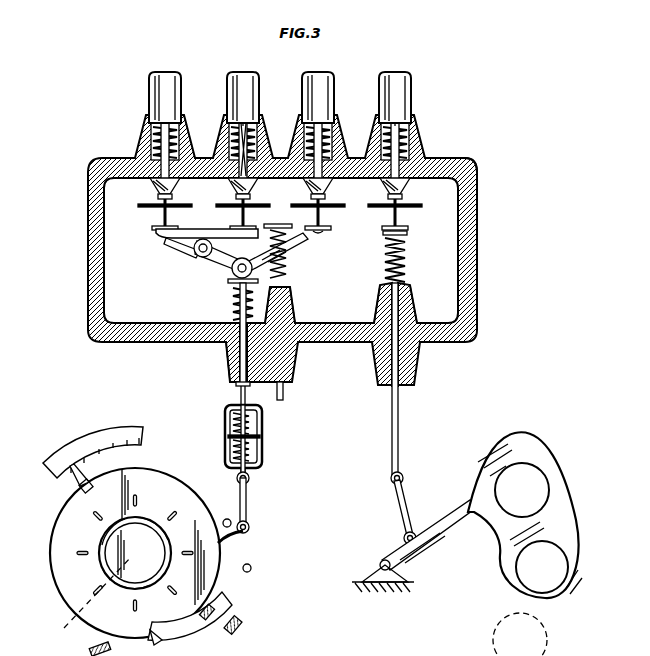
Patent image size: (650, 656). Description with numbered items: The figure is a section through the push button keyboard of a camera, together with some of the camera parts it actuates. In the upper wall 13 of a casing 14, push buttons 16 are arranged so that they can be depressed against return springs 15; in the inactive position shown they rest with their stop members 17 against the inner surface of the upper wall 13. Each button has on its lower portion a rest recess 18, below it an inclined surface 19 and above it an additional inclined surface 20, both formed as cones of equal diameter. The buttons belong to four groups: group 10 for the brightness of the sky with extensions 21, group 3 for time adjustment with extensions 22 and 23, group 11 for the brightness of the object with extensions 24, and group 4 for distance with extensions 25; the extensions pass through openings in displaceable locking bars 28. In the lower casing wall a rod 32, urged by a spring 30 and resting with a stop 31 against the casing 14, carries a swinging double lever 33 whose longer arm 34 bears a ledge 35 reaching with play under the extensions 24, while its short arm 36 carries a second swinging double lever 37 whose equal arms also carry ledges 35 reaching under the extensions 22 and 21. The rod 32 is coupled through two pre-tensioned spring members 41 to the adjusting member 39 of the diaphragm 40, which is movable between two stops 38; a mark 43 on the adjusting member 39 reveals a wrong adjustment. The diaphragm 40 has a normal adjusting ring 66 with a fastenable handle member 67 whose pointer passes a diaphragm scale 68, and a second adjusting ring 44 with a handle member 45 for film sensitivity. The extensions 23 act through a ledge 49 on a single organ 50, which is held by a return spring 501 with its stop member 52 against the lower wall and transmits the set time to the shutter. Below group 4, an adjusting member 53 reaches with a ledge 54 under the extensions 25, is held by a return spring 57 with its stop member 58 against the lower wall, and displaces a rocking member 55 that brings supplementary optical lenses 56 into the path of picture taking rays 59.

The push button group for time adjustment 3 is at (259, 106).
The push button group for distance adjustment 4 is at (411, 108).
The push button group for brightness of the sky 10 is at (148, 93).
The push button group for brightness of the object 11 is at (302, 88).
The upper wall 13 is at (466, 158).
The casing 14 is at (477, 215).
The return spring 15 is at (180, 136).
The push button 16 is at (226, 92).
The stop member 17 is at (134, 157).
The rest recess 18 is at (158, 196).
The inclined surface 19 is at (170, 195).
The additional inclined surface 20 is at (150, 180).
The extension 21 is at (155, 228).
The extension 22 is at (233, 226).
The extension 23 is at (296, 206).
The extension 24 is at (306, 228).
The extension 25 is at (410, 227).
The bar 28 is at (138, 206).
The spring 30 is at (233, 300).
The stop 31 is at (238, 384).
The rod 32 is at (228, 352).
The swinging double lever 33 is at (233, 270).
The longer arm 34 is at (290, 258).
The ledge 35 is at (178, 228).
The short arm 36 is at (196, 255).
The swinging double lever 37 is at (170, 243).
The stop 38 is at (228, 519).
The diaphragm adjusting member 39 is at (250, 527).
The diaphragm 40 is at (100, 560).
The pre-tensioned spring member 41 is at (226, 436).
The mark 43 is at (262, 436).
The second adjusting ring 44 is at (88, 598).
The handle member 45 is at (156, 638).
The ledge 49 is at (300, 244).
The organ 50 is at (297, 360).
The stop member 52 is at (284, 392).
The adjusting member 53 is at (415, 360).
The ledge 54 is at (408, 233).
The rocking member 55 is at (460, 514).
The supplementary optical lens 56 is at (545, 540).
The return spring 57 is at (407, 260).
The stop member 58 is at (401, 386).
The path of picture taking rays 59 is at (508, 622).
The diaphragm ring 66 is at (50, 553).
The fastenable handle member 67 is at (88, 495).
The diaphragm scale 68 is at (96, 430).
The return spring 501 is at (293, 285).